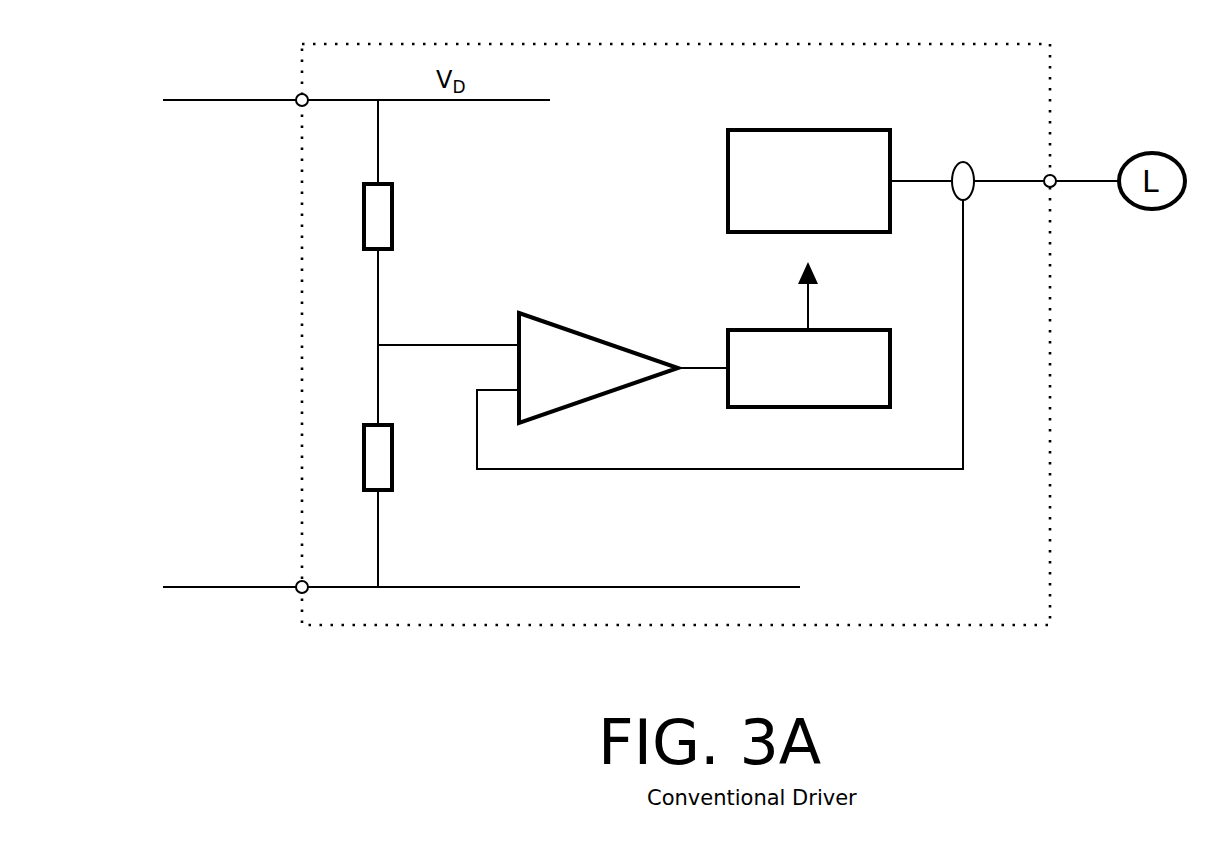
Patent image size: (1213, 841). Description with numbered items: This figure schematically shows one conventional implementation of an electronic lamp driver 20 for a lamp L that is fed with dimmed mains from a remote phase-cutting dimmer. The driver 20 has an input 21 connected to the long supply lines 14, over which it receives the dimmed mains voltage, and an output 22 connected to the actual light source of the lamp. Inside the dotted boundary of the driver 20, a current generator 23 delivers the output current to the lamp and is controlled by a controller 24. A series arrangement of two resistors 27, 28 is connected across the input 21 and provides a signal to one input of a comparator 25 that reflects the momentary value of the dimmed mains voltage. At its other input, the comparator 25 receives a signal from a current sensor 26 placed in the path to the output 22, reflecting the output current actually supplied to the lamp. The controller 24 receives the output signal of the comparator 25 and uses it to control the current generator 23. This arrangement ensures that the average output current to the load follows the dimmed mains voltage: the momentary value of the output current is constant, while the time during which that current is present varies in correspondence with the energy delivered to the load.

The supply lines 14 is at (187, 98).
The electronic lamp driver 20 is at (285, 361).
The input 21 is at (281, 332).
The output 22 is at (1081, 168).
The current generator 23 is at (809, 181).
The controller 24 is at (809, 368).
The comparator 25 is at (598, 368).
The current sensor 26 is at (960, 165).
The resistor 27 is at (356, 216).
The resistor 28 is at (356, 457).